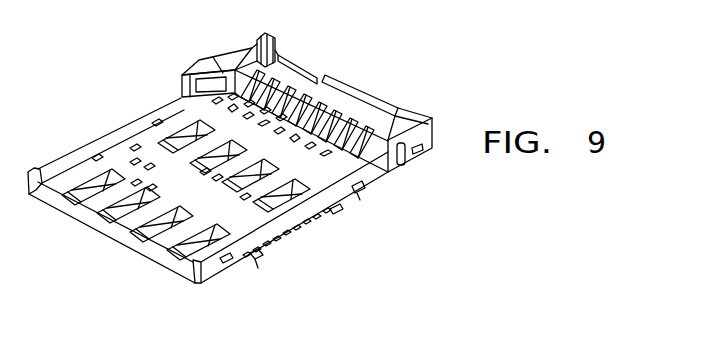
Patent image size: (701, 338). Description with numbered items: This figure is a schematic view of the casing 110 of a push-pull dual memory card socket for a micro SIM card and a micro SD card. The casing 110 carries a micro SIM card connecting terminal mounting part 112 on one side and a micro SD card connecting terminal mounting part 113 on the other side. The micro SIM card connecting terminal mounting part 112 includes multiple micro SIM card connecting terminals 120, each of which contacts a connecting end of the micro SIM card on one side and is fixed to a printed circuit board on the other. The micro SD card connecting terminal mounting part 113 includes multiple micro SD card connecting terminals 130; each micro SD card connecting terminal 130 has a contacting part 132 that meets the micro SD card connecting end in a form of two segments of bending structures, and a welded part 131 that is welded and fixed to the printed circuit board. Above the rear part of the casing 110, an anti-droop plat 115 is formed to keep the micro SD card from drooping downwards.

The casing 110 is at (158, 152).
The micro SIM card connecting terminal mounting part 112 is at (255, 253).
The micro SD card connecting terminal mounting part 113 is at (352, 190).
The anti-droop plat 115 is at (377, 103).
The micro SIM card connecting terminal 120 is at (164, 262).
The micro SD card connecting terminal 130 is at (310, 83).
The welded part 131 is at (307, 236).
The contacting part 132 is at (357, 120).